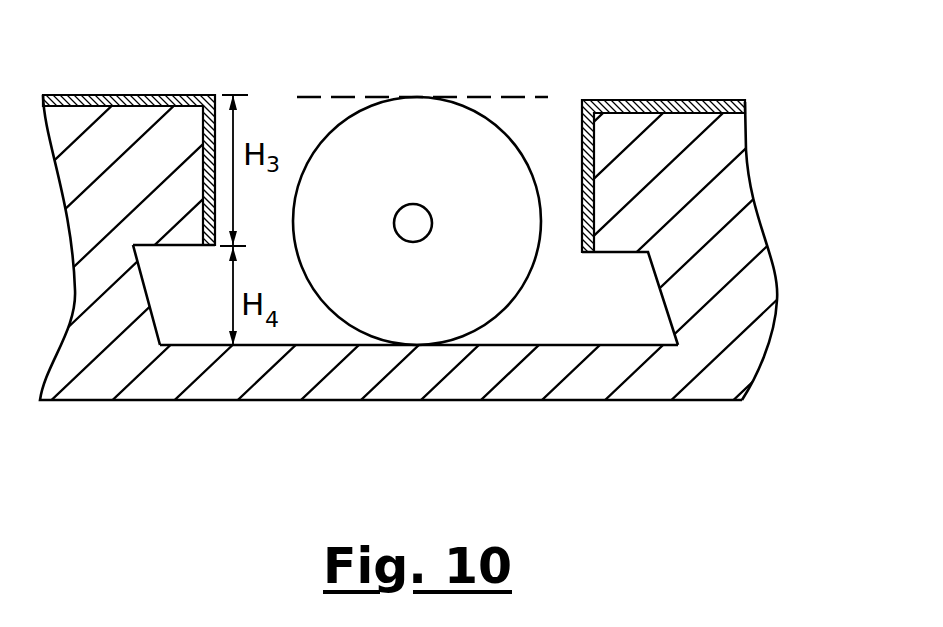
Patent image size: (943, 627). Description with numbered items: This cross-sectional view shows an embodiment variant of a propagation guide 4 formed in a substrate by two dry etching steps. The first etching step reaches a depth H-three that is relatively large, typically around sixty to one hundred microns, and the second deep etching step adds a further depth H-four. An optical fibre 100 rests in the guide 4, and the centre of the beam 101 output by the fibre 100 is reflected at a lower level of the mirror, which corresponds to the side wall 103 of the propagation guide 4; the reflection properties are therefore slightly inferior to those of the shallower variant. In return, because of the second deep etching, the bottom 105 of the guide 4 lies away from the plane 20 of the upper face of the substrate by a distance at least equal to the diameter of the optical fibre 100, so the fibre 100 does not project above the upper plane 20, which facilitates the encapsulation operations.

The propagation guide 4 is at (588, 278).
The plane of the upper face of the substrate 20 is at (655, 100).
The optical fibre 100 is at (477, 158).
The beam 101 is at (407, 217).
The side wall 103 is at (593, 145).
The bottom 105 is at (307, 345).